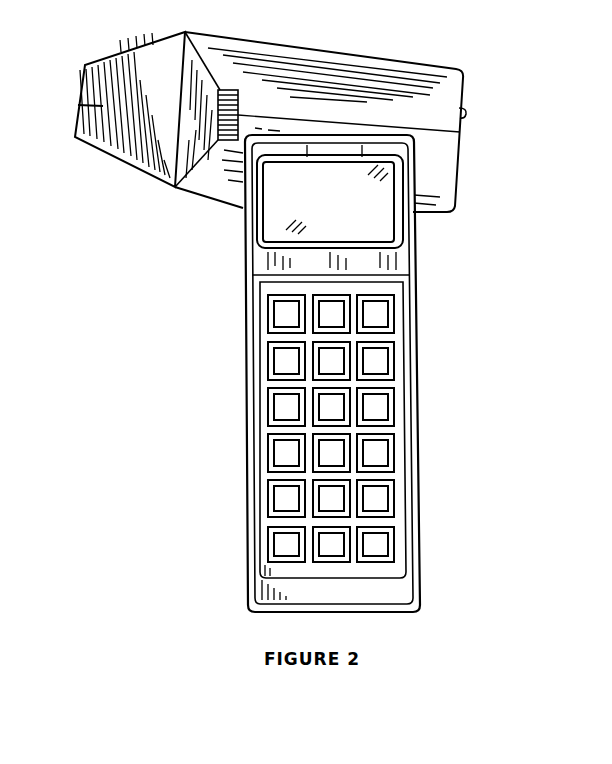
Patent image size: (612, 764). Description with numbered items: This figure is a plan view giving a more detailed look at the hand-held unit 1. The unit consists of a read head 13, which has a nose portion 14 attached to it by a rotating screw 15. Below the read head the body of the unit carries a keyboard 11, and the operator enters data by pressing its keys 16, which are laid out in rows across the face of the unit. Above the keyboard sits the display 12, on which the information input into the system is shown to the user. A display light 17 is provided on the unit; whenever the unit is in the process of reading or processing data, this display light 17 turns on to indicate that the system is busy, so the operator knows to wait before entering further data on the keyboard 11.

The hand-held unit 1 is at (413, 302).
The keyboard 11 is at (392, 428).
The display 12 is at (275, 205).
The read head 13 is at (320, 48).
The nose portion 14 is at (100, 155).
The rotating screw 15 is at (222, 141).
The keys 16 is at (382, 543).
The display light 17 is at (465, 117).